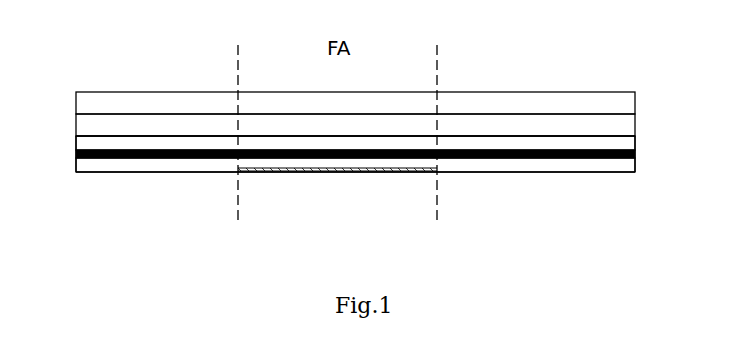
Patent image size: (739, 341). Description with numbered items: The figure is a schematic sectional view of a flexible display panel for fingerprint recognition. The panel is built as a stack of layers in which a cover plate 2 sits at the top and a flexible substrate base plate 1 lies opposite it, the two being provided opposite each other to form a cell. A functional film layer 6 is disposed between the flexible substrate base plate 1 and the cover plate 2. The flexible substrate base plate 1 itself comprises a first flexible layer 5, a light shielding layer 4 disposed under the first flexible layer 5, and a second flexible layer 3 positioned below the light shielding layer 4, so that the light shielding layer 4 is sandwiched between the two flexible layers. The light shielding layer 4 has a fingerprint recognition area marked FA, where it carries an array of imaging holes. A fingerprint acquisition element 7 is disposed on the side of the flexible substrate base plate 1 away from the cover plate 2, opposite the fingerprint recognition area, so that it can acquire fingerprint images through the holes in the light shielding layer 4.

The flexible substrate base plate 1 is at (67, 138).
The cover plate 2 is at (76, 93).
The second flexible layer 3 is at (635, 165).
The light shielding layer 4 is at (635, 153).
The first flexible layer 5 is at (635, 140).
The functional film layer 6 is at (76, 121).
The fingerprint acquisition element 7 is at (362, 172).